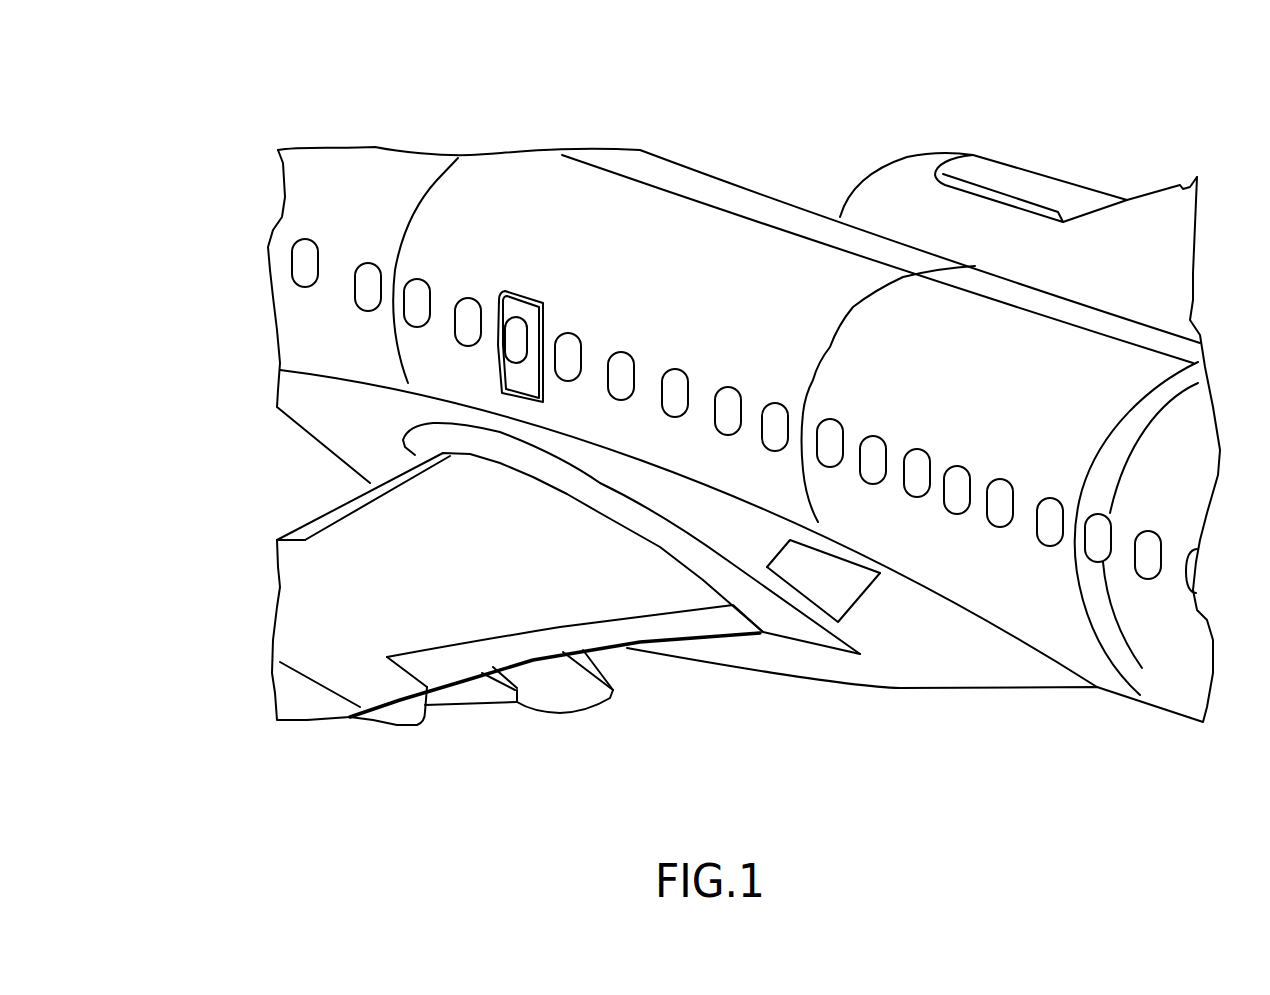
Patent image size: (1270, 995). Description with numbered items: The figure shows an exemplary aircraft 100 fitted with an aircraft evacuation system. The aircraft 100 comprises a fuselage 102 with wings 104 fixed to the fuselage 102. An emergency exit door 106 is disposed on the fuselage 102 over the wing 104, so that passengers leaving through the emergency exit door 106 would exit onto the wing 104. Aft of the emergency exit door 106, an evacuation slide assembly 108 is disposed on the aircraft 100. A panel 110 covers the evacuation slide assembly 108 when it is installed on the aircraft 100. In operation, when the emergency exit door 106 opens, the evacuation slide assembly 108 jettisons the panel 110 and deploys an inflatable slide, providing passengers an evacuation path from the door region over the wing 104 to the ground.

The aircraft 100 is at (212, 135).
The fuselage 102 is at (303, 335).
The wing 104 is at (503, 562).
The emergency exit door 106 is at (508, 288).
The evacuation slide assembly 108 is at (857, 595).
The panel 110 is at (840, 597).